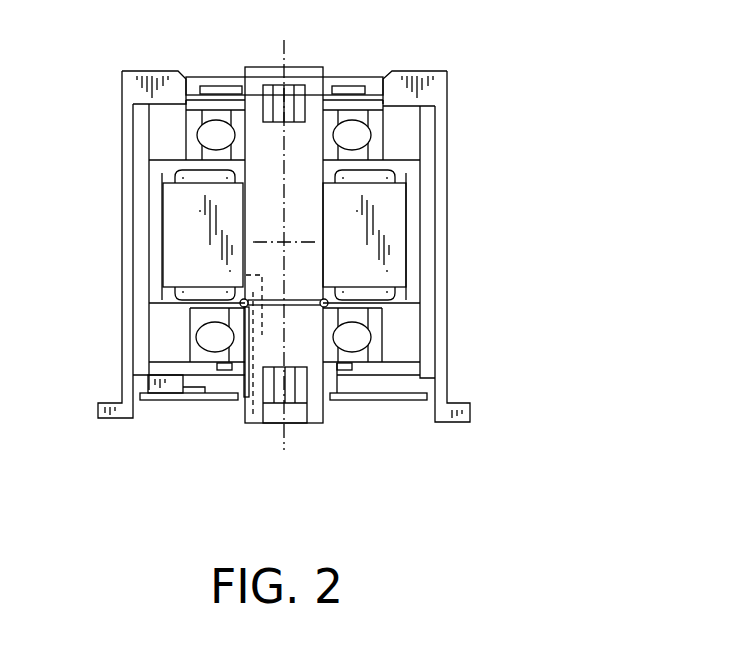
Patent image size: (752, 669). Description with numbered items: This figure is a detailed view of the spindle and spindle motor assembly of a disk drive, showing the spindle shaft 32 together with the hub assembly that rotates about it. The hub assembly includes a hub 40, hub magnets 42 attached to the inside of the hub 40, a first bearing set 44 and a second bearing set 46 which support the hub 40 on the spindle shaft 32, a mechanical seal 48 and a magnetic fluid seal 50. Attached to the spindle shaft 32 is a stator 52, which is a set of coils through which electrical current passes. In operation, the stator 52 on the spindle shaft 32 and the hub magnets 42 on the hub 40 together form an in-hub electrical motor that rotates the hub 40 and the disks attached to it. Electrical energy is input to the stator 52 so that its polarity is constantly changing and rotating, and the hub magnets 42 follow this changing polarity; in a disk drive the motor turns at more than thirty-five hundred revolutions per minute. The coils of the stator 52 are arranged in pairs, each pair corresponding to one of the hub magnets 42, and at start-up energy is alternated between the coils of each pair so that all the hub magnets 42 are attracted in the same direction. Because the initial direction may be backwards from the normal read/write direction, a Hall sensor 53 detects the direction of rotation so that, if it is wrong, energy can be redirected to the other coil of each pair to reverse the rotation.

The spindle shaft 32 is at (318, 76).
The hub 40 is at (442, 278).
The hub magnets 42 is at (412, 241).
The first bearing set 44 is at (188, 117).
The second bearing set 46 is at (190, 345).
The mechanical seal 48 is at (377, 368).
The magnetic fluid seal 50 is at (360, 80).
The stator 52 is at (195, 245).
The Hall sensor 53 is at (168, 387).